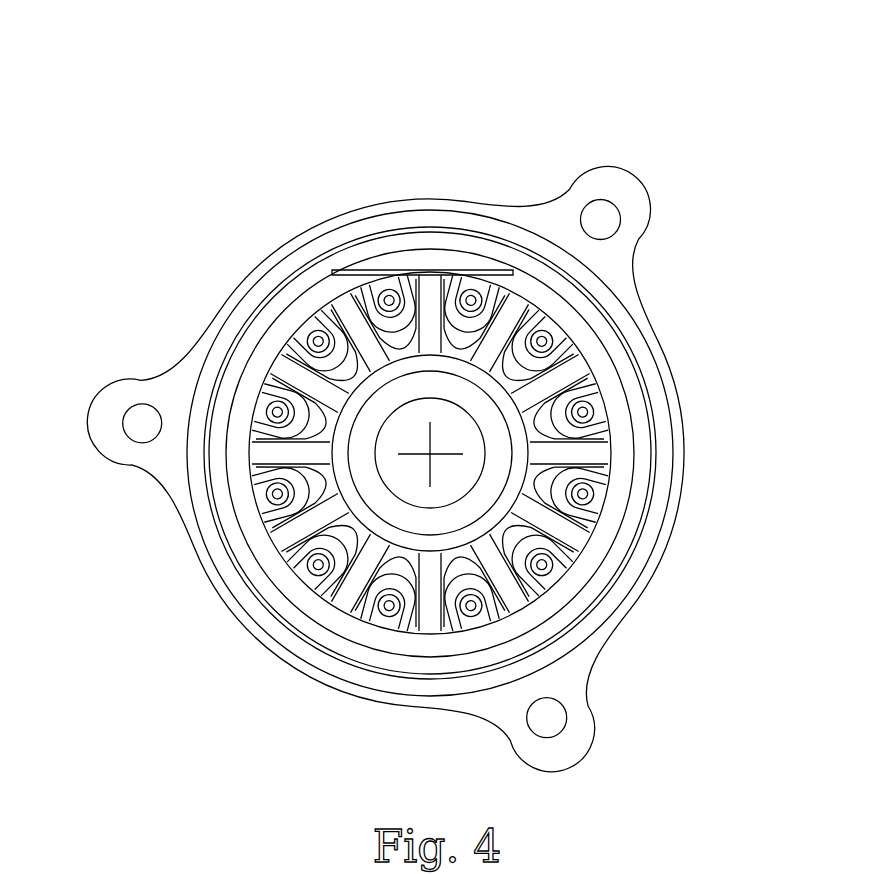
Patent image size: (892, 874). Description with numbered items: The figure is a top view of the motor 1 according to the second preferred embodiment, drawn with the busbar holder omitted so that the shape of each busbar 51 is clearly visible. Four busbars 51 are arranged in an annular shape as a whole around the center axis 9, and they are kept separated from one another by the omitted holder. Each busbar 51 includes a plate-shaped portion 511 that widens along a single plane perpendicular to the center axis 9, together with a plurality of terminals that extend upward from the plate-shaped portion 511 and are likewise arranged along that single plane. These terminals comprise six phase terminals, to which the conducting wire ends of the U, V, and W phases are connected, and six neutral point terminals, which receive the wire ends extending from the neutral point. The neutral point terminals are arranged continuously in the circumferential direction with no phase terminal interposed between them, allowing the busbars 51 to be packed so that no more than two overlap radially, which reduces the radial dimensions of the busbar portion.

The motor 1 is at (320, 99).
The center axis 9 is at (422, 447).
The busbar 51 is at (318, 292).
The plate-shaped portion 511 is at (519, 272).